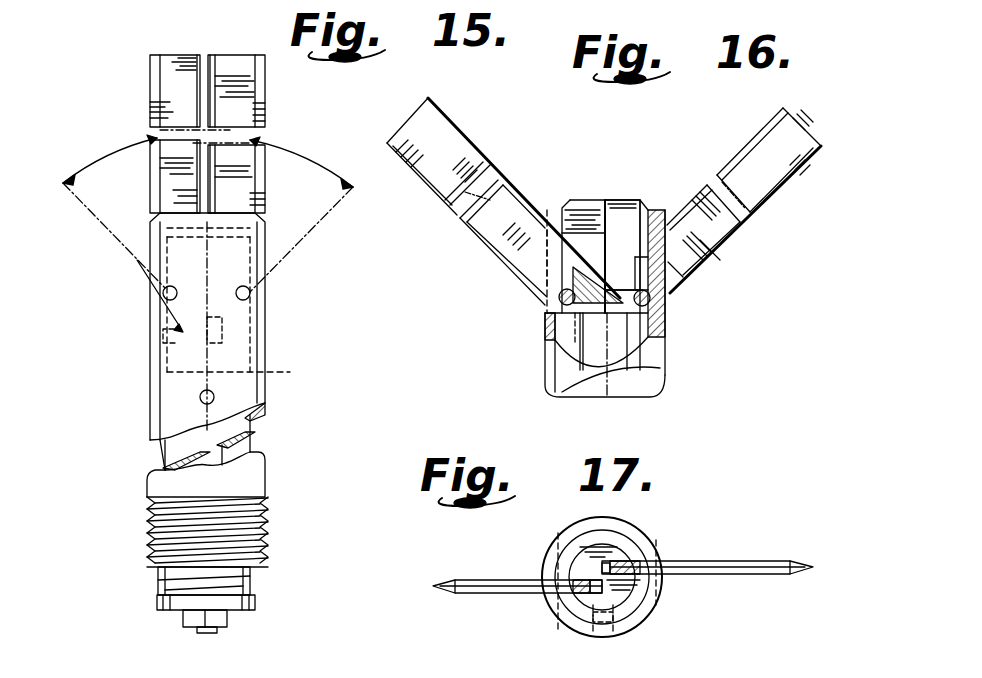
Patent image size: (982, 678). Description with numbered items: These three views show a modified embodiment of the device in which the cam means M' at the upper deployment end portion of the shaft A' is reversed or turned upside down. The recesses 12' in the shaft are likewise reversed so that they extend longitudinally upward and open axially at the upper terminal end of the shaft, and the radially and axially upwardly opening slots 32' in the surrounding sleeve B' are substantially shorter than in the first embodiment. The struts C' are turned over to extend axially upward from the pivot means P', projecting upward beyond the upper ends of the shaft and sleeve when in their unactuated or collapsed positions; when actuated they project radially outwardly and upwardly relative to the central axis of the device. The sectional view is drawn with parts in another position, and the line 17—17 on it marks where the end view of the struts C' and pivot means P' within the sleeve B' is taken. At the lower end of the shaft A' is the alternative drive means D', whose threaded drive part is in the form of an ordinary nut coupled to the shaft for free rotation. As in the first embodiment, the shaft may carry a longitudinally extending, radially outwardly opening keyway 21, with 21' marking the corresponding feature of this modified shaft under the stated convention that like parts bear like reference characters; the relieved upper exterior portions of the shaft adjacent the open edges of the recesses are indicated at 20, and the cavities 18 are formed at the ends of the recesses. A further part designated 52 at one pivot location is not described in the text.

In FIG. 15, the struts C' is at (192, 134).
In FIG. 16, the struts C' is at (604, 197).
In FIG. 17, the struts C' is at (606, 553).
In FIG. 15, the section line 17 is at (360, 145).
In FIG. 16, the section line 17 is at (874, 149).
In FIG. 15, the pivot means P' is at (258, 293).
In FIG. 16, the pivot means P' is at (549, 315).
In FIG. 17, the pivot means P' is at (607, 572).
In FIG. 15, the cam means M' is at (153, 336).
In FIG. 16, the cam means M' is at (527, 344).
In FIG. 15, the keyway 21 is at (240, 372).
In FIG. 15, the hole 21' is at (262, 393).
In FIG. 15, the shaft A' is at (248, 329).
In FIG. 16, the shaft A' is at (637, 298).
In FIG. 17, the shaft A' is at (630, 560).
In FIG. 15, the drive means D' is at (168, 542).
In FIG. 16, the slots 32' is at (533, 217).
In FIG. 16, the recesses 12' is at (612, 217).
In FIG. 17, the recesses 12' is at (607, 588).
In FIG. 16, the pin 52 is at (558, 300).
In FIG. 16, the relieved upper exterior portions of the shaft 20 is at (722, 246).
In FIG. 16, the cavities 18 is at (668, 268).
In FIG. 16, the sleeve B' is at (690, 296).
In FIG. 17, the sleeve B' is at (614, 553).